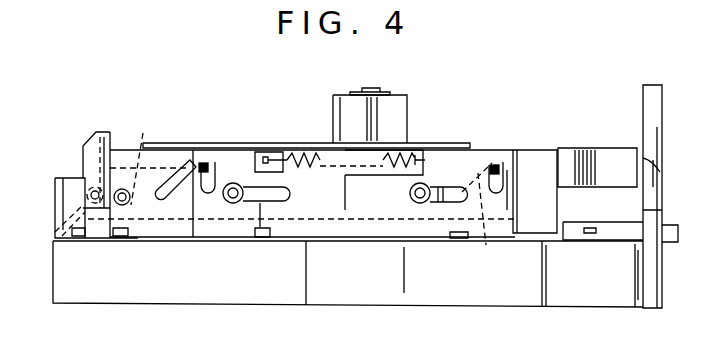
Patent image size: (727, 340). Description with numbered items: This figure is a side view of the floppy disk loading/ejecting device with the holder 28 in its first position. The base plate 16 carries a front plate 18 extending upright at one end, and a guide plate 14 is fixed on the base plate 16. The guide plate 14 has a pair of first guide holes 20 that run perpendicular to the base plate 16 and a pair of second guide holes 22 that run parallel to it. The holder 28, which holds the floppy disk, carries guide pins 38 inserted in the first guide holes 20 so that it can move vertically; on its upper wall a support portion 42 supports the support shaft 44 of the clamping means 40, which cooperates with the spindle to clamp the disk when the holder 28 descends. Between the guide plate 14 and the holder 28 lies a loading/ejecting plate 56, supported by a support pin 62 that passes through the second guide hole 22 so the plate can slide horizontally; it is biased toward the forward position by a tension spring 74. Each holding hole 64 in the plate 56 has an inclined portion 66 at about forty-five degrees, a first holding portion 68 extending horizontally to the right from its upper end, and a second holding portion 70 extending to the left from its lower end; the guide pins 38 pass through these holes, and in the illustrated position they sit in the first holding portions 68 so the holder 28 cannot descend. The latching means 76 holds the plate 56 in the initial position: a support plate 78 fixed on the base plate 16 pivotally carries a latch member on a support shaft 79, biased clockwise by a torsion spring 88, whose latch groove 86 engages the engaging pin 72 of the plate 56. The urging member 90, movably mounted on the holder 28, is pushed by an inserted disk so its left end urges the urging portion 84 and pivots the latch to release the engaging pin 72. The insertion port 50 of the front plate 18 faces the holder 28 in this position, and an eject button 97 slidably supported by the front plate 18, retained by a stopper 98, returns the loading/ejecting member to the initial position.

The guide plate 14 is at (287, 228).
The base plate 16 is at (526, 293).
The front plate 18 is at (652, 122).
The first guide hole 20 is at (208, 198).
The second guide hole 22 is at (285, 194).
The holder 28 is at (583, 139).
The guide pin 38 is at (213, 160).
The clamping means 40 is at (384, 98).
The support portion 42 is at (335, 118).
The support shaft 44 is at (375, 90).
The insertion port 50 is at (660, 172).
The loading/ejecting plate 56 is at (353, 212).
The support pin 62 is at (234, 183).
The holding hole 64 is at (196, 162).
The inclined portion 66 is at (189, 200).
The first holding portion 68 is at (202, 162).
The second holding portion 70 is at (160, 198).
The engaging pin 72 is at (119, 205).
The tension spring 74 is at (287, 162).
The latching means 76 is at (83, 187).
The support plate 78 is at (62, 205).
The support shaft 79 is at (97, 203).
The urging portion 84 is at (118, 124).
The latch groove 86 is at (149, 158).
The torsion spring 88 is at (90, 152).
The urging member 90 is at (445, 145).
The eject button 97 is at (678, 233).
The stopper 98 is at (590, 234).